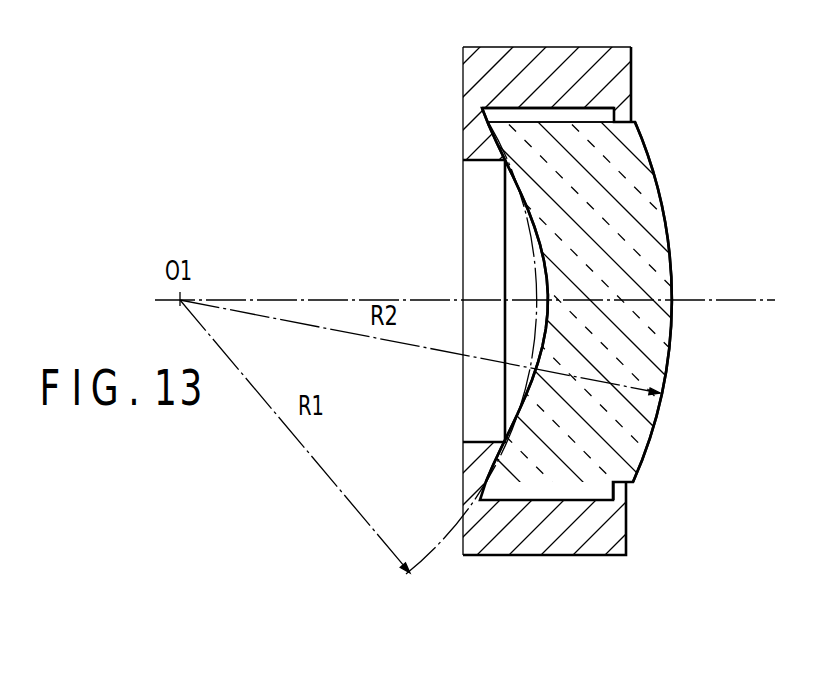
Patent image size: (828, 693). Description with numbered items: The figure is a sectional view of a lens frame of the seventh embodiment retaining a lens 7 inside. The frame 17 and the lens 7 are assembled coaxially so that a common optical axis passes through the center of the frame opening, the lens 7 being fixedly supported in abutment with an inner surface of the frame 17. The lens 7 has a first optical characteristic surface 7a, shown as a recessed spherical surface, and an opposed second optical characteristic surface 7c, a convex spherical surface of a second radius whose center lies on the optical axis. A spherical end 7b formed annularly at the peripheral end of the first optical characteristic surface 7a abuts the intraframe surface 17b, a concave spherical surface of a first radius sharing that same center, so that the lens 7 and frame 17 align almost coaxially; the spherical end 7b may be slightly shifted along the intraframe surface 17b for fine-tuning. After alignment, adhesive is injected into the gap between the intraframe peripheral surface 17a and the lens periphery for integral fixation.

The frame 17 is at (452, 83).
The intraframe peripheral surface 17a is at (560, 100).
The intraframe surface 17b is at (481, 120).
The lens 7 is at (700, 270).
The first optical characteristic surface 7a is at (538, 237).
The spherical end 7b is at (500, 127).
The second optical characteristic surface 7c is at (670, 367).